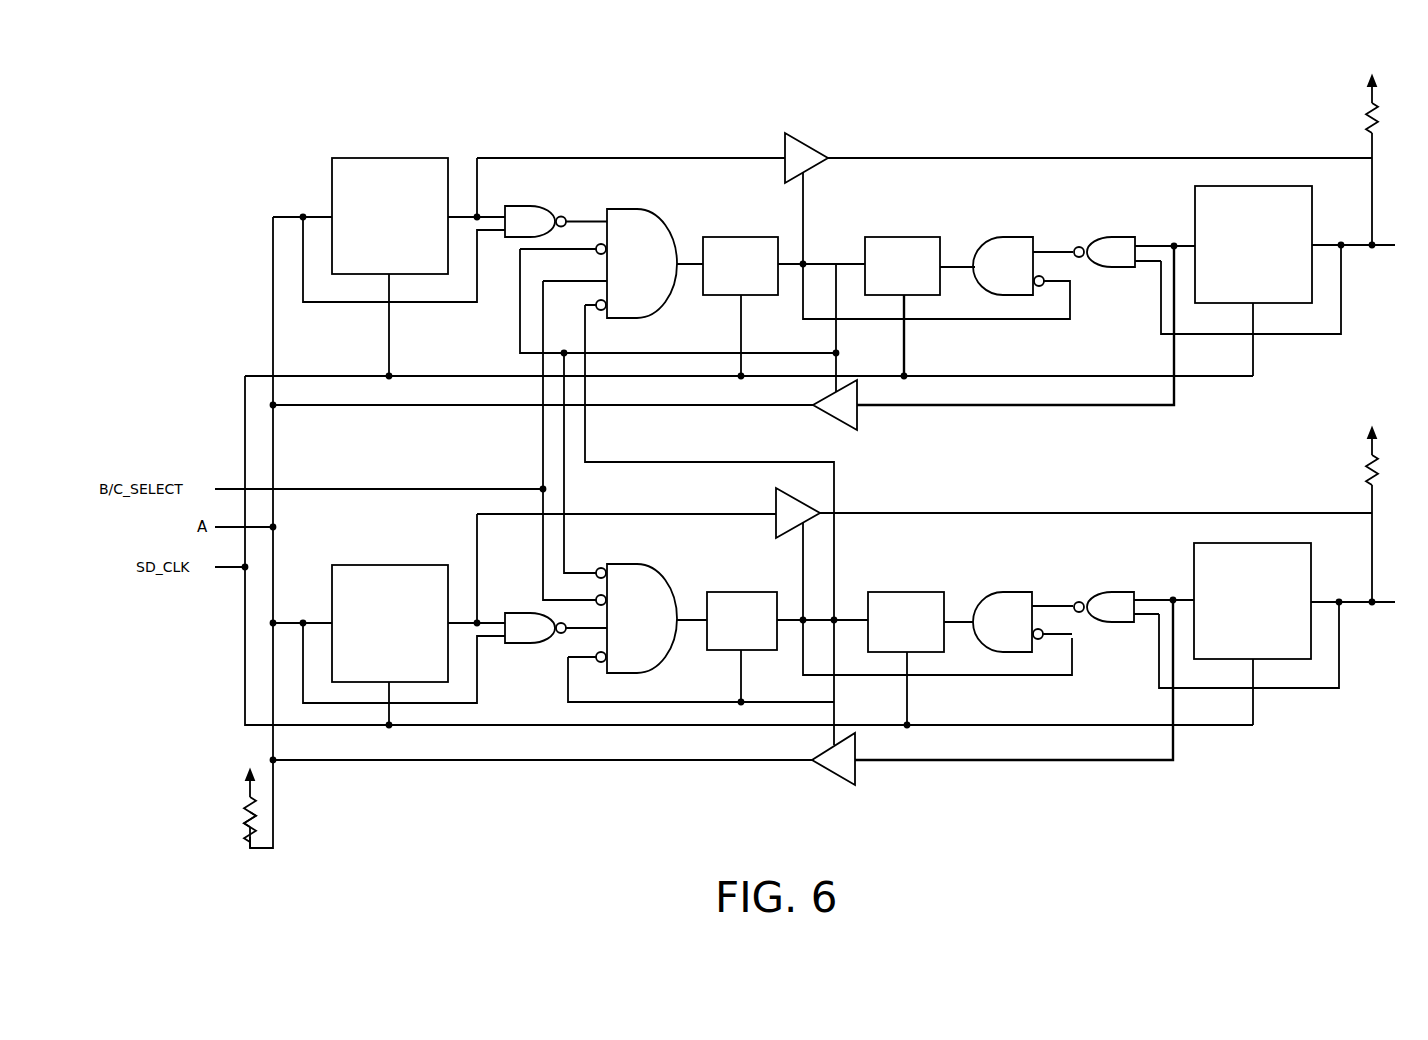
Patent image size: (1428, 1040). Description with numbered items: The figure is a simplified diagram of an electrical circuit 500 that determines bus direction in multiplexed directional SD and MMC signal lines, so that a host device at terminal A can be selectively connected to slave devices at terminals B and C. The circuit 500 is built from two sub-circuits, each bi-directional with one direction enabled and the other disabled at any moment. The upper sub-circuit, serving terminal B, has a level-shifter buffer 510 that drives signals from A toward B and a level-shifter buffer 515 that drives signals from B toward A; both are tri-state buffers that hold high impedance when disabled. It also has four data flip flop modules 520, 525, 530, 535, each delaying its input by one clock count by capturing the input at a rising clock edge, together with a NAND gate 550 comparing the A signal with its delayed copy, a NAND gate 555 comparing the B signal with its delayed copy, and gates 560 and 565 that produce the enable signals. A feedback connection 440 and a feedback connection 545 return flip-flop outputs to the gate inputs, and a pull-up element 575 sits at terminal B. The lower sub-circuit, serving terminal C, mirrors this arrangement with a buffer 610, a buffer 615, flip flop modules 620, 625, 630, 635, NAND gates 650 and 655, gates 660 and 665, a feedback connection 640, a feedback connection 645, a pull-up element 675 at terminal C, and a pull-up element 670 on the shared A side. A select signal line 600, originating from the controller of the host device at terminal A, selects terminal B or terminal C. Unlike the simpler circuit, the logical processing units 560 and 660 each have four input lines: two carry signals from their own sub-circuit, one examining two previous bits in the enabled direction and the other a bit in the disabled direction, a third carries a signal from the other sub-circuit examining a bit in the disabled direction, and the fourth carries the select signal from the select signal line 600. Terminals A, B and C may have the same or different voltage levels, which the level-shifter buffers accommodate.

The electrical circuit 500 is at (748, 532).
The level-shifter buffer 510 is at (805, 145).
The level-shifter buffer 515 is at (822, 422).
The data flip flop module 520 is at (394, 157).
The data flip flop module 525 is at (1247, 186).
The data flip flop module 530 is at (744, 236).
The data flip flop module 535 is at (903, 236).
The feedback line 440 is at (478, 283).
The feedback line 545 is at (1158, 306).
The logical processing unit 550 is at (525, 205).
The logical processing unit 555 is at (1119, 238).
The logical processing unit 560 is at (622, 209).
The logical processing unit 565 is at (1012, 238).
The sub-circuit element 575 is at (1377, 105).
The B/C_SELECT signal line 600 is at (397, 488).
The level-shifter buffer 610 is at (792, 501).
The level-shifter buffer 615 is at (822, 779).
The data flip flop module 620 is at (394, 565).
The data flip flop module 625 is at (1247, 543).
The data flip flop module 630 is at (744, 592).
The data flip flop module 635 is at (907, 592).
The feedback line 640 is at (478, 691).
The feedback line 645 is at (1157, 665).
The logical processing unit 650 is at (528, 613).
The logical processing unit 655 is at (1118, 592).
The logical processing unit 660 is at (659, 582).
The logical processing unit 665 is at (1012, 592).
The sub-circuit element 670 is at (243, 808).
The sub-circuit element 675 is at (1377, 461).